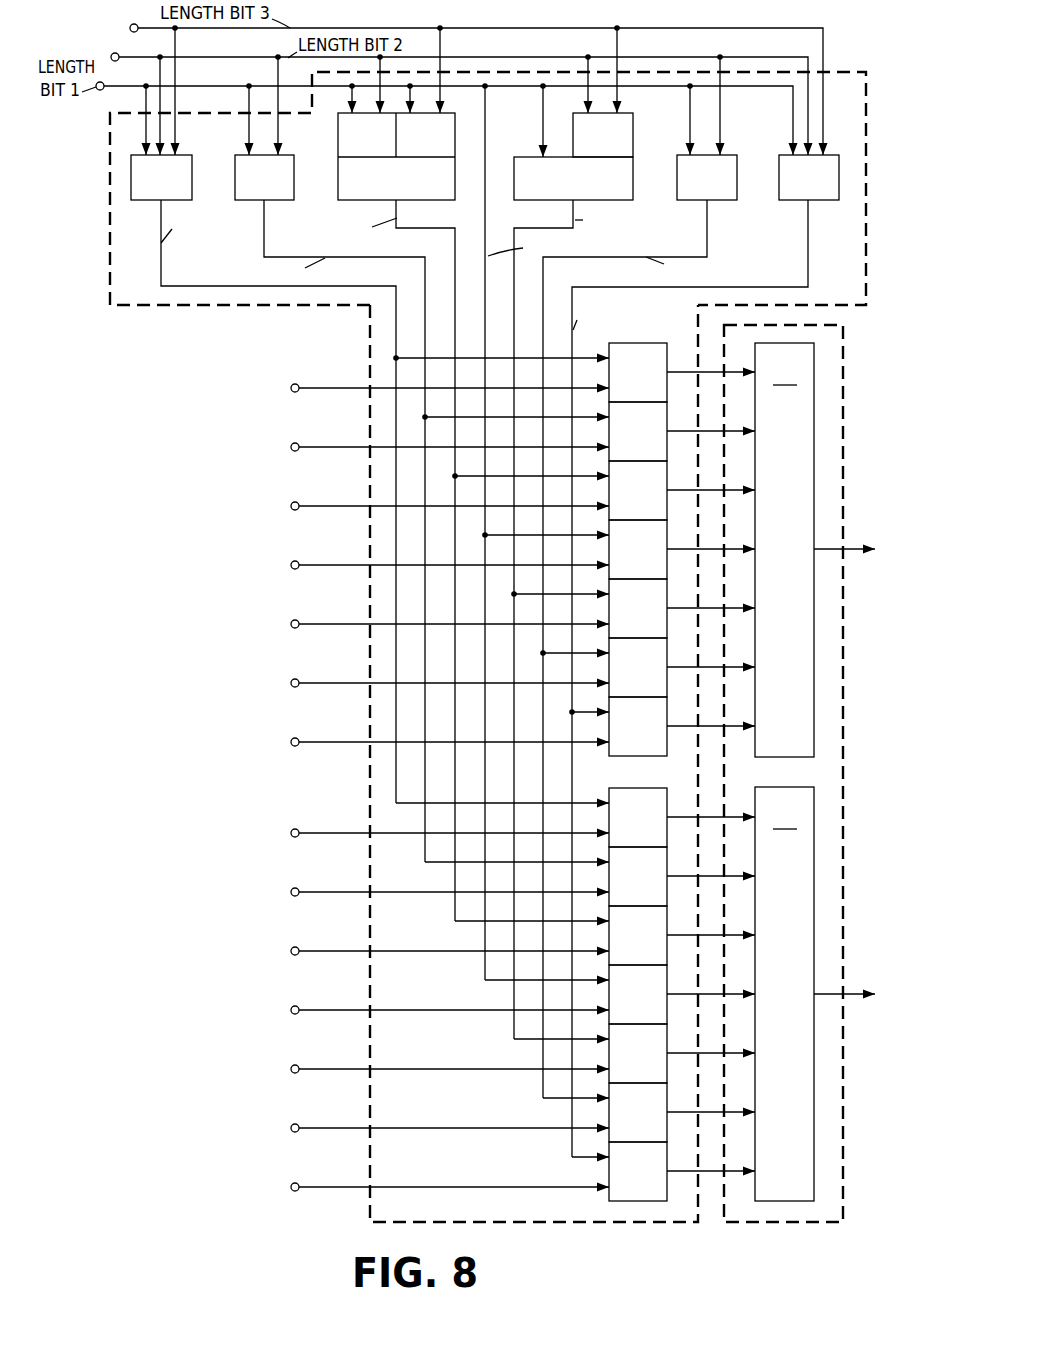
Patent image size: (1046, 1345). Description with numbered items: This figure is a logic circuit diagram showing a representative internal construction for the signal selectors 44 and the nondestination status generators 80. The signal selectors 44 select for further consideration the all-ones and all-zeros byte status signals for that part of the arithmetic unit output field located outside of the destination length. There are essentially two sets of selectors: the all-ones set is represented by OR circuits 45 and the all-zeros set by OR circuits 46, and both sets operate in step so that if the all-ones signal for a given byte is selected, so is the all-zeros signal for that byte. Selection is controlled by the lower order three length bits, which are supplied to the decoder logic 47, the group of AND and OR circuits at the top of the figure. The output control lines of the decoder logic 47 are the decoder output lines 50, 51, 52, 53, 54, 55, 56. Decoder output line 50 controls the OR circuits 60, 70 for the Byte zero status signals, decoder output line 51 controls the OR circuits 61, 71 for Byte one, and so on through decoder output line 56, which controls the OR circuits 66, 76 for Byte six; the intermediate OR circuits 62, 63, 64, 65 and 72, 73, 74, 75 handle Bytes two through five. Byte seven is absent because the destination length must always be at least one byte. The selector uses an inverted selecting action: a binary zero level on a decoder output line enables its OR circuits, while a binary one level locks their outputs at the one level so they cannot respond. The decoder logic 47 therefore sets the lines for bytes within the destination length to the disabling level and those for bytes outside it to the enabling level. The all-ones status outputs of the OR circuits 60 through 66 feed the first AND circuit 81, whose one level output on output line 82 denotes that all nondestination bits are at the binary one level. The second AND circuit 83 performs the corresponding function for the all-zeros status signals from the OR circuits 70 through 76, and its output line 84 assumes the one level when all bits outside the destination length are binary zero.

The signal selectors 44 is at (368, 325).
The OR circuits 45 is at (598, 343).
The OR circuits 46 is at (598, 783).
The decoder logic 47 is at (116, 222).
The decoder output line 50 is at (161, 270).
The decoder output line 51 is at (264, 232).
The decoder output line 52 is at (432, 228).
The decoder output line 53 is at (485, 198).
The decoder output line 54 is at (514, 228).
The decoder output line 55 is at (707, 246).
The decoder output line 56 is at (808, 252).
The OR circuit 60 is at (658, 350).
The OR circuit 61 is at (662, 418).
The OR circuit 62 is at (662, 477).
The OR circuit 63 is at (662, 536).
The OR circuit 64 is at (662, 595).
The OR circuit 65 is at (662, 654).
The OR circuit 66 is at (662, 713).
The OR circuit 70 is at (657, 795).
The OR circuit 71 is at (662, 863).
The OR circuit 72 is at (662, 922).
The OR circuit 73 is at (662, 981).
The OR circuit 74 is at (662, 1040).
The OR circuit 75 is at (662, 1099).
The OR circuit 76 is at (662, 1158).
The nondestination status generators 80 is at (845, 390).
The first AND circuit 81 is at (784, 550).
The output line 82 is at (848, 548).
The second AND circuit 83 is at (784, 994).
The output line 84 is at (847, 992).